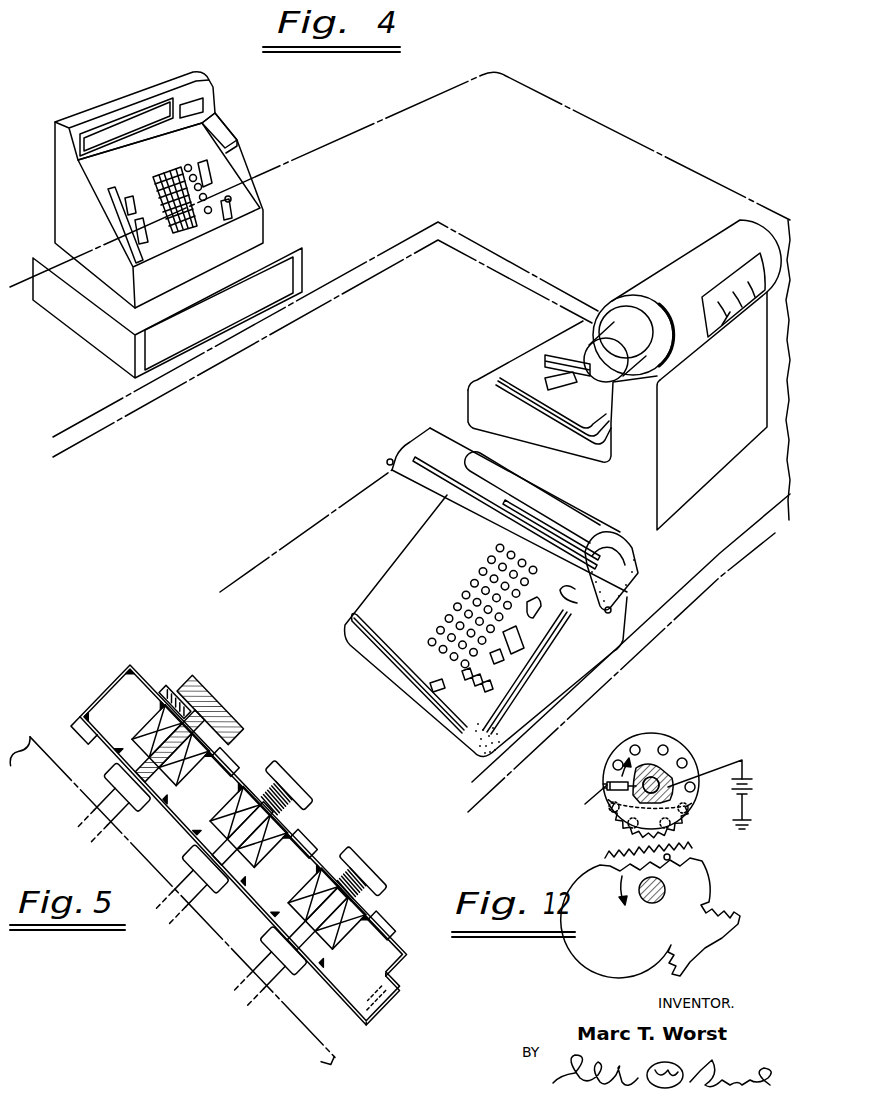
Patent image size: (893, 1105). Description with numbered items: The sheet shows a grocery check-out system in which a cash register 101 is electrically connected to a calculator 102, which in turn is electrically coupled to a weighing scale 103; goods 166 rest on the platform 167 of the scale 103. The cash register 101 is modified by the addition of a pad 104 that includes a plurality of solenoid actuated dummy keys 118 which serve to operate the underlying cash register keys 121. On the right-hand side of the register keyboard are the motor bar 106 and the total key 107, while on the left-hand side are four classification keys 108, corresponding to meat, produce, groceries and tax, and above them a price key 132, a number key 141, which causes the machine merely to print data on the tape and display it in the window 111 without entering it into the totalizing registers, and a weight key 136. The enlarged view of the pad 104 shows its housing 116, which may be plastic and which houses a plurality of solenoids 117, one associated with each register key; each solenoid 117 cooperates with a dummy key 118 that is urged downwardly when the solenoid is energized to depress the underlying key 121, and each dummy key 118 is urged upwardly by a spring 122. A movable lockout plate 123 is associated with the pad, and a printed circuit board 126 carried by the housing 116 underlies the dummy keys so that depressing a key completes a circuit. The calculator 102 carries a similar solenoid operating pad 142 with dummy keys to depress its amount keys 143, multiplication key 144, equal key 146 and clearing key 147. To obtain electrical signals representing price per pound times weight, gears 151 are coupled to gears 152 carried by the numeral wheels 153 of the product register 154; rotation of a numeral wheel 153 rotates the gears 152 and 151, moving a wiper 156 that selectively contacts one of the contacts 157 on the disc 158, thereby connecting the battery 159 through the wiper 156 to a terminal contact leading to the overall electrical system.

In FIG. 4, the cash register 101 is at (155, 88).
In FIG. 5, the cash register 101 is at (334, 1043).
In FIG. 4, the calculator 102 is at (410, 573).
In FIG. 4, the weighing scale 103 is at (720, 236).
In FIG. 4, the pad 104 is at (164, 240).
In FIG. 5, the pad 104 is at (103, 690).
In FIG. 4, the motor bar 106 is at (210, 170).
In FIG. 4, the total key 107 is at (213, 180).
In FIG. 4, the classification keys 108 is at (130, 237).
In FIG. 4, the window 111 is at (105, 133).
In FIG. 5, the housing 116 is at (143, 683).
In FIG. 5, the solenoids 117 is at (233, 748).
In FIG. 4, the dummy keys 118 is at (190, 223).
In FIG. 5, the dummy keys 118 is at (225, 697).
In FIG. 5, the cash register keys 121 is at (153, 803).
In FIG. 5, the spring 122 is at (183, 698).
In FIG. 5, the lockout plate 123 is at (377, 1007).
In FIG. 5, the printed circuit board 126 is at (391, 942).
In FIG. 4, the price key 132 is at (127, 198).
In FIG. 4, the weight key 136 is at (130, 220).
In FIG. 4, the number key 141 is at (126, 207).
In FIG. 4, the solenoid operating pad 142 is at (566, 595).
In FIG. 4, the amount keys 143 is at (445, 657).
In FIG. 4, the multiplication key 144 is at (530, 620).
In FIG. 4, the equal key 146 is at (505, 665).
In FIG. 4, the clearing key 147 is at (478, 698).
In FIG. 12, the gears 151 is at (616, 826).
In FIG. 12, the gears 152 is at (606, 856).
In FIG. 12, the numeral wheels 153 is at (632, 933).
In FIG. 4, the product register 154 is at (623, 533).
In FIG. 12, the wiper 156 is at (651, 787).
In FIG. 12, the contacts 157 is at (686, 760).
In FIG. 12, the disc 158 is at (622, 752).
In FIG. 12, the battery 159 is at (752, 788).
In FIG. 4, the goods 166 is at (565, 357).
In FIG. 4, the platform 167 is at (518, 373).